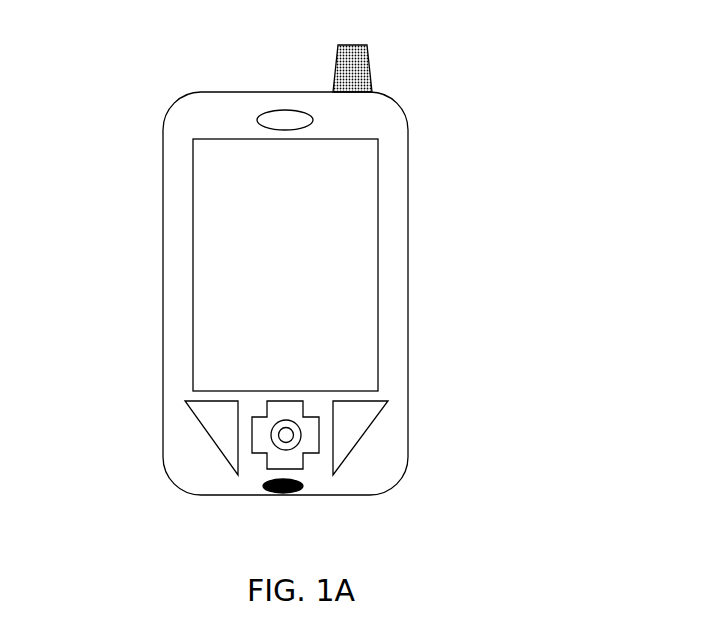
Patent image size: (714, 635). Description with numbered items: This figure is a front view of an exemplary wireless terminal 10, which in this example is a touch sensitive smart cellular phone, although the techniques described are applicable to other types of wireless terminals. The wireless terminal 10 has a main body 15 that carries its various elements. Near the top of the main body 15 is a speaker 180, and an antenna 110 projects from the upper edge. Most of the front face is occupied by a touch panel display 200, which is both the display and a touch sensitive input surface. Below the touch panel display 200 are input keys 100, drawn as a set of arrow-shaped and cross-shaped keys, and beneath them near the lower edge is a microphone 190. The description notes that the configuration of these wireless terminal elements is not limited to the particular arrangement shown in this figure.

The wireless terminal 10 is at (288, 285).
The main body 15 is at (400, 198).
The input keys 100 is at (258, 455).
The antenna 110 is at (370, 60).
The speaker 180 is at (270, 108).
The microphone 190 is at (303, 490).
The touch panel display 200 is at (220, 247).